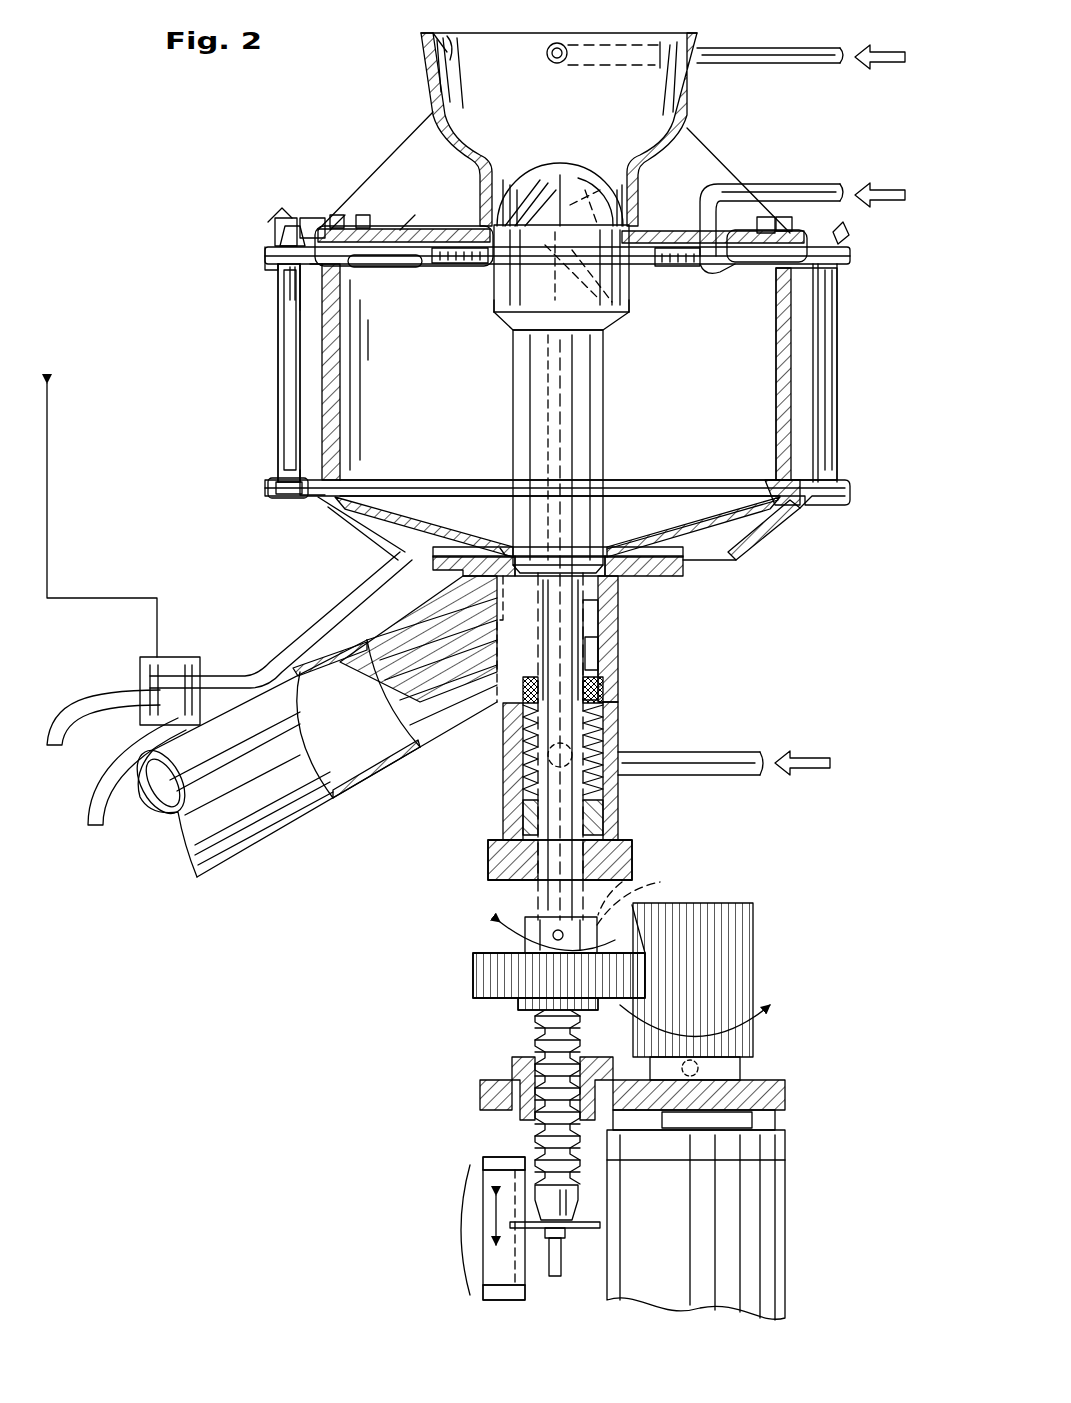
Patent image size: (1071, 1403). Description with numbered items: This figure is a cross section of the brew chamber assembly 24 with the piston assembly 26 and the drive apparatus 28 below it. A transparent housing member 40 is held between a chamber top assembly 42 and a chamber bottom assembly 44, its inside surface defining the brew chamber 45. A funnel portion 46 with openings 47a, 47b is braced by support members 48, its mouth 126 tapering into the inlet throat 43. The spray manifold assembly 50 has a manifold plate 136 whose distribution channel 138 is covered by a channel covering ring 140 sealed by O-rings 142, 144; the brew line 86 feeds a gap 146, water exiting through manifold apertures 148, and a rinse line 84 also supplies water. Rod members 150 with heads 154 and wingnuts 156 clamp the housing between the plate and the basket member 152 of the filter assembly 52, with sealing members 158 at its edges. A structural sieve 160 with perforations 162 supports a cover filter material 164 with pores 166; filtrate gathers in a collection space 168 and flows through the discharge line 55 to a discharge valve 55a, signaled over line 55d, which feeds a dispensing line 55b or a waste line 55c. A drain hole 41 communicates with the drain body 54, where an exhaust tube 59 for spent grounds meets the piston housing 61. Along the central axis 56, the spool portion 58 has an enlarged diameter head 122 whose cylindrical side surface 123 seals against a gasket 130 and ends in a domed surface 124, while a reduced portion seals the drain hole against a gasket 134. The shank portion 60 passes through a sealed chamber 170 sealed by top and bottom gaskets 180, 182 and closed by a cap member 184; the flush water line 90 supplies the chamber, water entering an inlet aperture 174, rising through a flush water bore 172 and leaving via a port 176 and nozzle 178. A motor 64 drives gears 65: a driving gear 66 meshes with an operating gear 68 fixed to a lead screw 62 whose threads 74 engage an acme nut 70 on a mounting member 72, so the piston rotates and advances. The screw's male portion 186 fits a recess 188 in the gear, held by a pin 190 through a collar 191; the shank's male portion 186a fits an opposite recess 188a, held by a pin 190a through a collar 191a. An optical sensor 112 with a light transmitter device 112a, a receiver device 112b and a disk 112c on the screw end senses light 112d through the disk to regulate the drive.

The brew chamber assembly 24 is at (234, 168).
The piston assembly 26 is at (598, 593).
The drive apparatus 28 is at (392, 1140).
The housing member 40 is at (328, 410).
The drain hole 41 is at (512, 549).
The chamber top assembly 42 is at (268, 213).
The inlet throat 43 is at (450, 285).
The chamber bottom assembly 44 is at (242, 515).
The brew chamber 45 is at (420, 341).
The funnel portion 46 is at (422, 72).
The top opening 47a is at (449, 48).
The bottom opening 47b is at (480, 185).
The support members 48 is at (412, 133).
The spray manifold assembly 50 is at (242, 290).
The filter assembly 52 is at (352, 540).
The drain body 54 is at (662, 578).
The discharge line 55 is at (336, 604).
The discharge valve 55a is at (188, 658).
The dispensing line 55b is at (95, 697).
The waste line 55c is at (90, 783).
The line 55d is at (88, 598).
The central axis 56 is at (562, 420).
The spool portion 58 is at (518, 418).
The exhaust tube 59 is at (268, 833).
The shank portion 60 is at (552, 918).
The piston housing 61 is at (618, 676).
The lead screw 62 is at (462, 1033).
The motor 64 is at (697, 1218).
The gears 65 is at (615, 905).
The driving gear 66 is at (754, 926).
The operating gear 68 is at (490, 978).
The acme nut 70 is at (512, 1072).
The mounting member 72 is at (480, 1096).
The threads 74 is at (535, 1050).
The rinse line 84 is at (770, 50).
The brew line 86 is at (826, 184).
The flush water line 90 is at (762, 750).
The optical sensor 112 is at (458, 1240).
The light transmitter device 112a is at (483, 1165).
The receiver device 112b is at (483, 1286).
The disk 112c is at (586, 1240).
The light 112d is at (500, 1240).
The enlarged diameter head 122 is at (530, 258).
The cylindrical side surface 123 is at (612, 300).
The domed surface 124 is at (532, 180).
The mouth 126 is at (556, 25).
The gasket 130 is at (468, 234).
The gasket 134 is at (632, 590).
The manifold plate 136 is at (266, 260).
The distribution channel 138 is at (402, 238).
The channel covering ring 140 is at (372, 162).
The inside O-ring 142 is at (715, 290).
The outside O-ring 144 is at (716, 265).
The gap 146 is at (368, 262).
The manifold apertures 148 is at (435, 264).
The rod members 150 is at (290, 360).
The basket member 152 is at (760, 547).
The head 154 is at (270, 486).
The wingnut 156 is at (300, 228).
The sealing members 158 is at (325, 308).
The structural sieve 160 is at (772, 526).
The perforations 162 is at (692, 546).
The cover filter material 164 is at (742, 480).
The pores 166 is at (690, 527).
The collection space 168 is at (732, 562).
The sealed chamber 170 is at (472, 862).
The flush water bore 172 is at (556, 360).
The inlet aperture 174 is at (588, 745).
The port 176 is at (600, 182).
The nozzle 178 is at (616, 320).
The top gasket 180 is at (497, 730).
The bottom gasket 182 is at (512, 800).
The cap member 184 is at (506, 866).
The male portion 186 is at (473, 985).
The male portion 186a is at (672, 872).
The recess 188 is at (473, 968).
The recess 188a is at (622, 882).
The pin 190 is at (520, 1010).
The pin 190a is at (525, 930).
The collar 191 is at (520, 1004).
The collar 191a is at (527, 946).